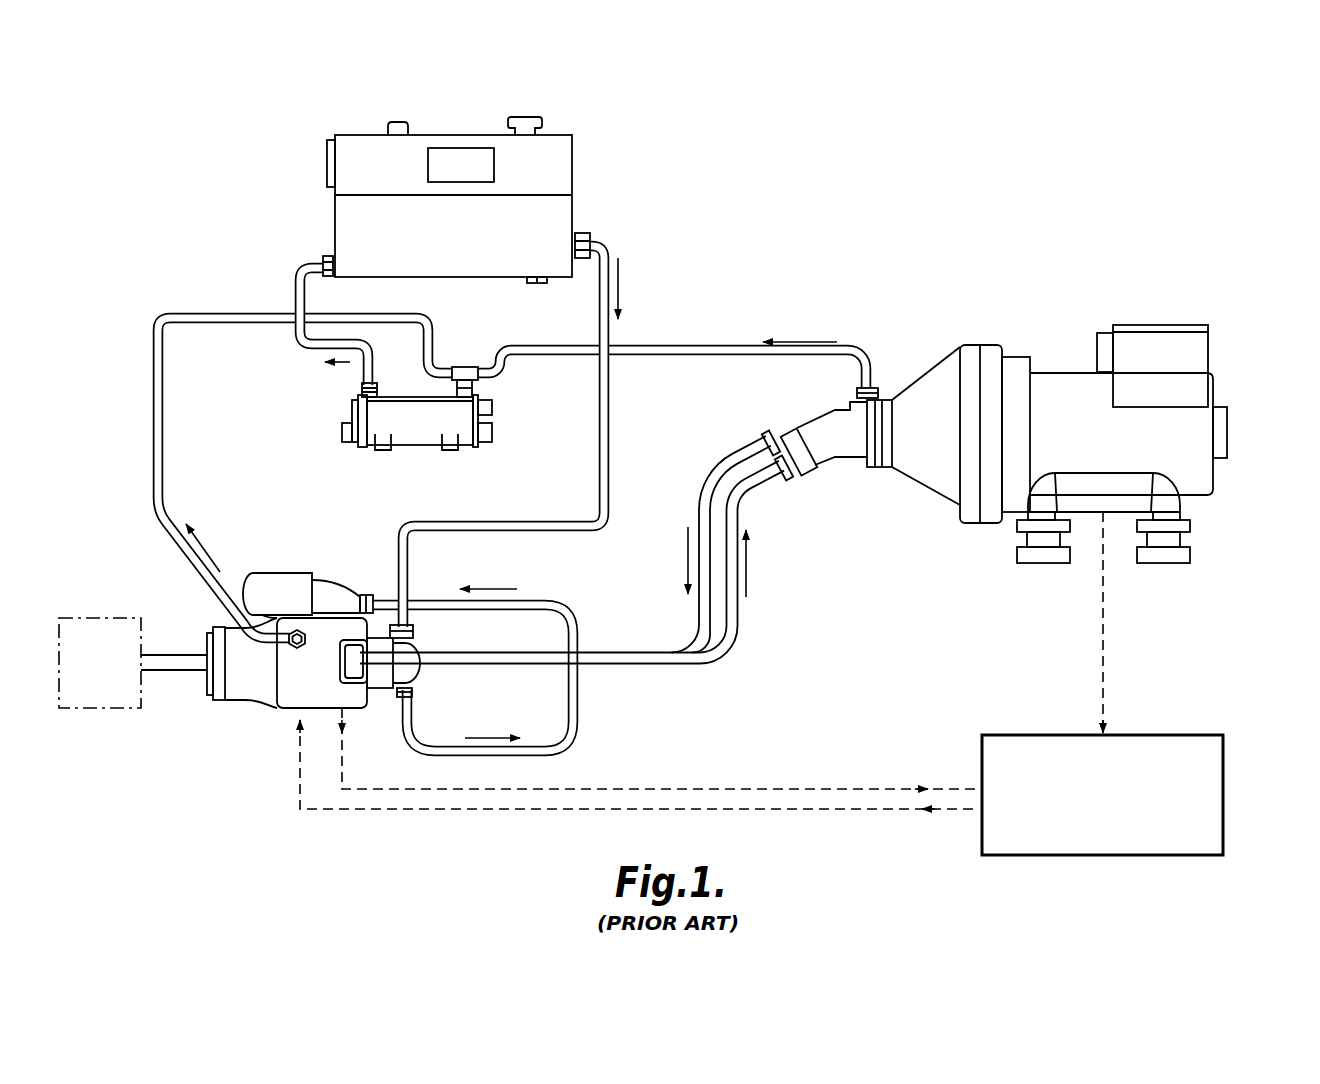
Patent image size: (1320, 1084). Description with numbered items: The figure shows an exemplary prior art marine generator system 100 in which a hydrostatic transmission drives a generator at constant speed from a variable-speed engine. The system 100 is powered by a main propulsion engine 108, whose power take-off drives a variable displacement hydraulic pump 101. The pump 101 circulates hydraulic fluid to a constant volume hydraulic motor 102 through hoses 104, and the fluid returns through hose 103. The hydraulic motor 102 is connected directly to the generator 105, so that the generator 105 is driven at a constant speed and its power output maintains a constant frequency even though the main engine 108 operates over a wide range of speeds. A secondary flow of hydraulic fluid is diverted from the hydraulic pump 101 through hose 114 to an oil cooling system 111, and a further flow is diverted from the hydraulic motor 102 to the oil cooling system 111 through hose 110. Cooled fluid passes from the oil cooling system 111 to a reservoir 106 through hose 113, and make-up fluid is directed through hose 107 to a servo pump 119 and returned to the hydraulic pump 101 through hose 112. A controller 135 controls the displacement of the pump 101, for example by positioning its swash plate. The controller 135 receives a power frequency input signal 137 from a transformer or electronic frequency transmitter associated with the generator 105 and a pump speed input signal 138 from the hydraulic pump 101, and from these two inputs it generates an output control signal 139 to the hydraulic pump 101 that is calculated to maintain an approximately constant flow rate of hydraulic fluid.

The marine generator system 100 is at (752, 162).
The variable displacement hydraulic pump 101 is at (233, 700).
The constant volume hydraulic motor 102 is at (872, 467).
The hose 103 is at (699, 607).
The hoses 104 is at (740, 610).
The generator 105 is at (1073, 368).
The reservoir 106 is at (573, 172).
The hose 107 is at (600, 293).
The main propulsion engine 108 is at (93, 617).
The hose 110 is at (653, 356).
The oil cooling system 111 is at (412, 447).
The hose 112 is at (578, 685).
The hose 113 is at (293, 288).
The hose 114 is at (198, 572).
The servo pump 119 is at (420, 672).
The controller 135 is at (1223, 788).
The power frequency input signal 137 is at (1100, 625).
The pump speed input signal 138 is at (817, 788).
The output control signal 139 is at (815, 810).